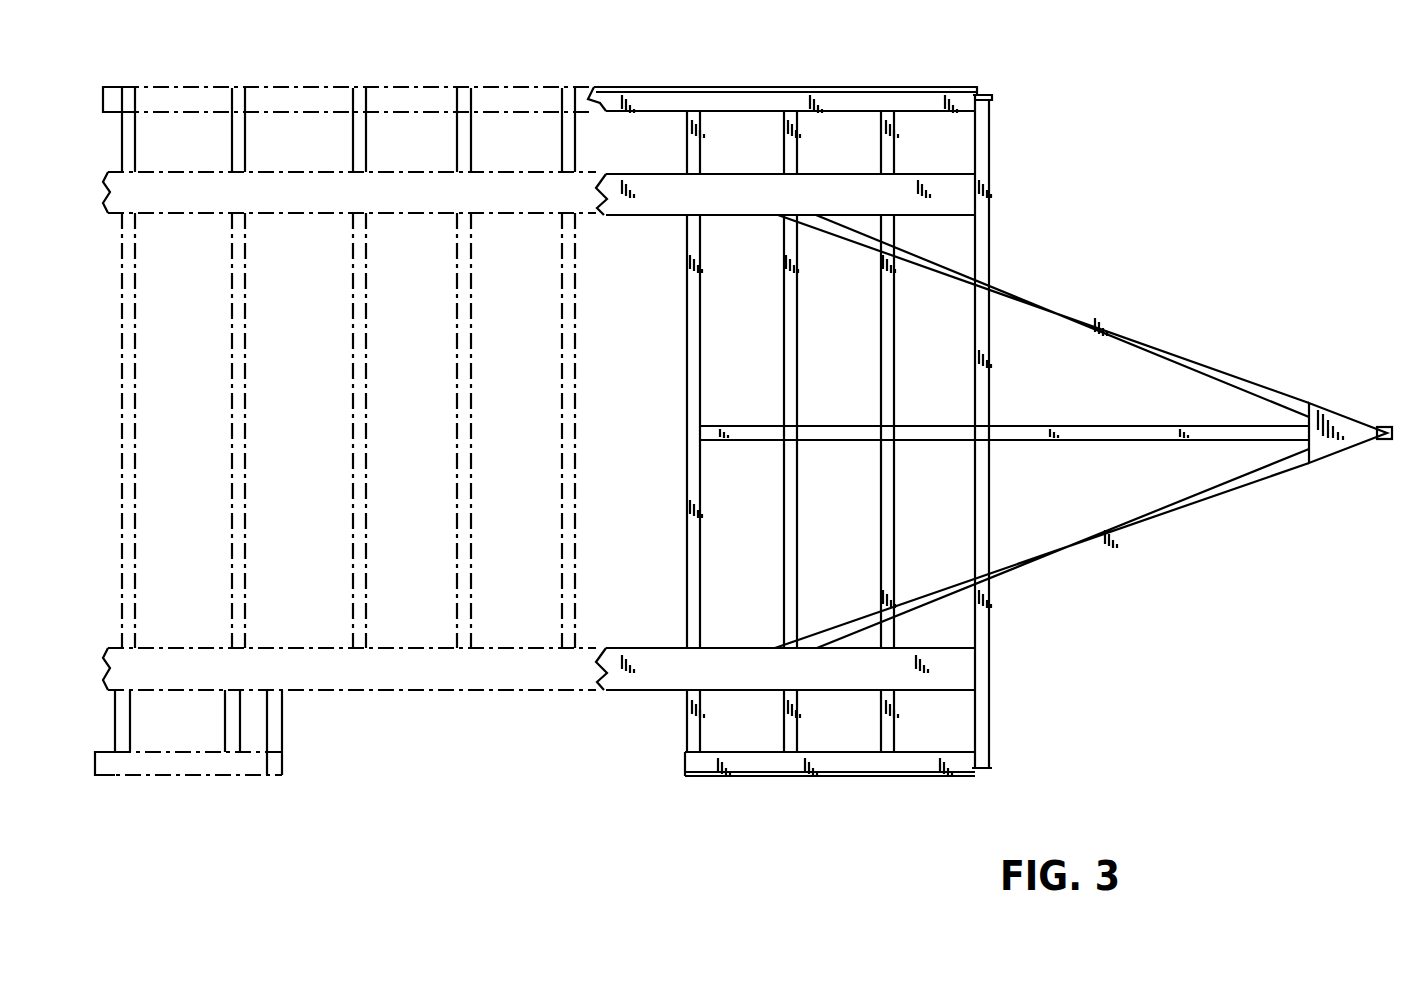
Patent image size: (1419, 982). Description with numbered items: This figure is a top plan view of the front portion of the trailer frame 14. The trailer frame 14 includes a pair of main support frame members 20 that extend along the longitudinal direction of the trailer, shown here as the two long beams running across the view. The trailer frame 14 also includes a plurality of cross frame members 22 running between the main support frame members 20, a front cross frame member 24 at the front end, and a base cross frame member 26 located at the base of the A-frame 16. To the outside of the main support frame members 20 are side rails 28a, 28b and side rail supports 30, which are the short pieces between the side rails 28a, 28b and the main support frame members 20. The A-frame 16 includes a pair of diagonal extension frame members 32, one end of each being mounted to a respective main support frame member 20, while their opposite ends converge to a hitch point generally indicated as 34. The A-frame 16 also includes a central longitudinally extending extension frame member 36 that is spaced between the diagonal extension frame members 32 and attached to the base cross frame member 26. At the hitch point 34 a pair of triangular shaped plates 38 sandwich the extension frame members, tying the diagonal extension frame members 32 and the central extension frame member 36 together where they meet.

The trailer frame 14 is at (576, 431).
The A-frame 16 is at (1055, 420).
The main support frame members 20 is at (408, 197).
The cross frame members 22 is at (238, 409).
The front cross frame member 24 is at (982, 593).
The base cross frame member 26 is at (695, 540).
The side rail 28a is at (760, 760).
The side rail 28b is at (857, 108).
The side rail supports 30 is at (789, 163).
The diagonal extension frame members 32 is at (1133, 346).
The hitch point 34 is at (1376, 408).
The central longitudinally extending extension frame member 36 is at (1063, 432).
The triangular shaped plates 38 is at (1360, 433).